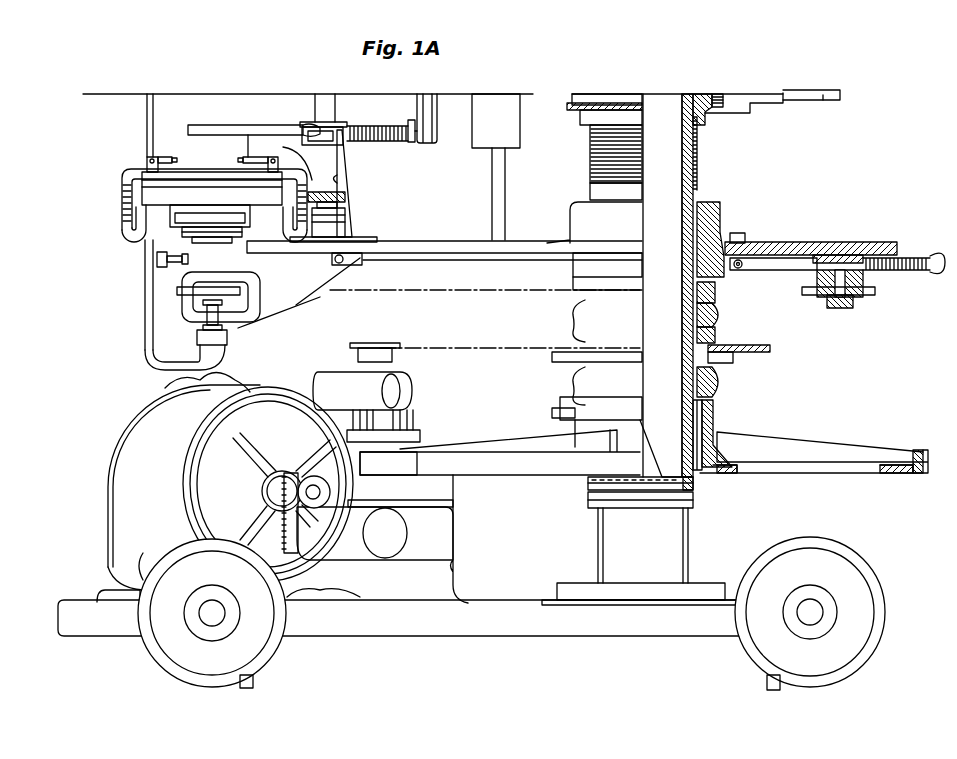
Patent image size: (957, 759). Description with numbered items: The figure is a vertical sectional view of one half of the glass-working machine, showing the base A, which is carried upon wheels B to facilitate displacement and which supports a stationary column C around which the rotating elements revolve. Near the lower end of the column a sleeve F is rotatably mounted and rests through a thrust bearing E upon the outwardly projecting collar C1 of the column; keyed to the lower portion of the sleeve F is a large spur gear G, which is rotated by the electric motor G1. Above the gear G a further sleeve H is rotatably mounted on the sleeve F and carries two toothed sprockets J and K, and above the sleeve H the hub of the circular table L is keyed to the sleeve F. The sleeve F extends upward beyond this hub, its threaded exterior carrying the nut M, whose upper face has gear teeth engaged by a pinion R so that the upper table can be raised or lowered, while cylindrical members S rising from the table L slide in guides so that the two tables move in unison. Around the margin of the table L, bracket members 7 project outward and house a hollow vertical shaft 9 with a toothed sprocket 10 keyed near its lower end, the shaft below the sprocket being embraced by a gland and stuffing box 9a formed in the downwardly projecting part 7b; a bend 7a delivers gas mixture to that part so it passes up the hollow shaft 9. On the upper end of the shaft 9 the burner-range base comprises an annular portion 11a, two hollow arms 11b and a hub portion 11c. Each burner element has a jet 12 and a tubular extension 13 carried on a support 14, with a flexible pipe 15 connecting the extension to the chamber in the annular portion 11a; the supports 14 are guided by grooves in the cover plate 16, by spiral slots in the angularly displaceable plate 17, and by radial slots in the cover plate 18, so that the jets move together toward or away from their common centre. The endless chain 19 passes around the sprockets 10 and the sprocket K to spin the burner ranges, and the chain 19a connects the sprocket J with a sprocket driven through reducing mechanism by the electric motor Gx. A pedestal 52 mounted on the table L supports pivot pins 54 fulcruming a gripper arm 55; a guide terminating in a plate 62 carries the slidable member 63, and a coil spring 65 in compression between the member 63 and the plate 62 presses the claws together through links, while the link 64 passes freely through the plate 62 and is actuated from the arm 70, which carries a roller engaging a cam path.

The arm 55 is at (215, 128).
The jet 12 is at (249, 135).
The pivot pin 54 is at (286, 117).
The link 64 is at (357, 126).
The plate 62 is at (410, 122).
The slidable member 63 is at (347, 144).
The coil spring 65 is at (390, 142).
The pedestal 52 is at (345, 172).
The flexible pipe 15 is at (136, 252).
The cylindrical member S is at (348, 222).
The support 14 is at (147, 162).
The tubular extension 13 is at (128, 171).
The cover plate 18 is at (160, 176).
The plate 17 is at (157, 182).
The cover plate 16 is at (157, 190).
The annular portion 11a is at (172, 222).
The arm 11b is at (149, 248).
The hub portion 11c is at (210, 223).
The shaft 9 is at (223, 308).
The gland and stuffing box 9a is at (197, 328).
The bend 7a is at (217, 358).
The toothed sprocket 10 is at (262, 296).
The downwardly projecting part 7b is at (300, 312).
The bracket member 7 is at (360, 265).
The circular table L is at (430, 246).
The endless driving chain 19 is at (412, 291).
The endless chain 19a is at (470, 347).
The electric motor G1 is at (122, 470).
The electric motor Gx is at (168, 385).
The nut M is at (703, 123).
The pinion R is at (720, 102).
The arm 70 is at (863, 288).
The toothed sprocket K is at (717, 290).
The sleeve F is at (720, 308).
The sleeve H is at (717, 328).
The toothed sprocket J is at (750, 352).
The spur gear G is at (920, 452).
The thrust bearing E is at (700, 481).
The collar C1 is at (690, 499).
The column C is at (670, 538).
The base A is at (480, 628).
The wheel B is at (270, 650).